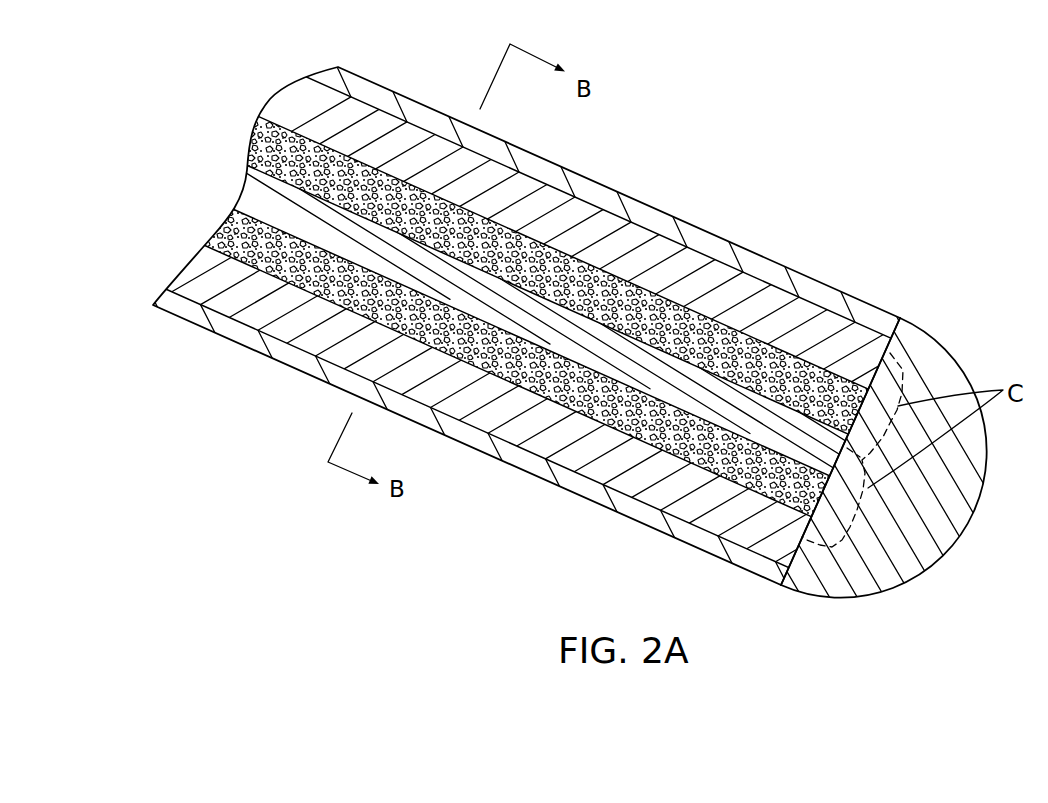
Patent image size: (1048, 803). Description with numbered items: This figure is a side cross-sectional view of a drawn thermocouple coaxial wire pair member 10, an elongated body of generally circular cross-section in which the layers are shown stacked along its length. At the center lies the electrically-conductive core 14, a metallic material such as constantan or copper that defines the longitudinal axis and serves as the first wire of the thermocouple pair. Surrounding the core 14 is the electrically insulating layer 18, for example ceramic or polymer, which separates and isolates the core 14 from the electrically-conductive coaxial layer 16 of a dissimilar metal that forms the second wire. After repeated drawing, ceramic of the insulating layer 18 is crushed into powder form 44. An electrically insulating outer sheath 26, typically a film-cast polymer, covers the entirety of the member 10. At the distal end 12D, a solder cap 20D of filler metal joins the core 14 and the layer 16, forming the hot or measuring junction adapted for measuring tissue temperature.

The drawn thermocouple coaxial wire pair member 10 is at (234, 452).
The electrically insulating outer sheath 26 is at (554, 172).
The electrically-conductive coaxial layer 16 is at (622, 235).
The electrically insulating layer 18 is at (690, 275).
The electrically-conductive core 14 is at (723, 378).
The powder form 44 is at (713, 467).
The distal end 12D is at (870, 313).
The solder cap 20D is at (950, 353).